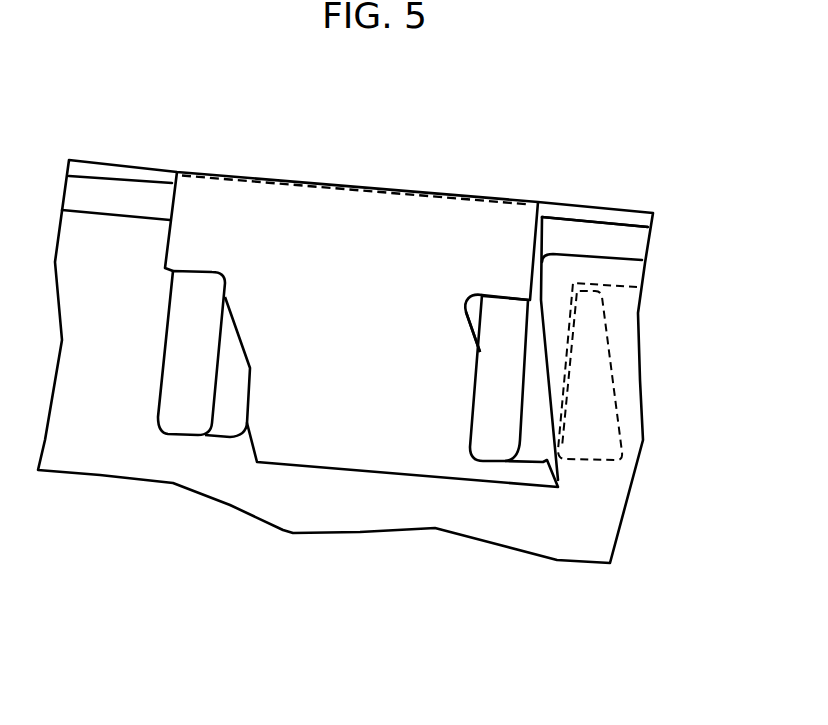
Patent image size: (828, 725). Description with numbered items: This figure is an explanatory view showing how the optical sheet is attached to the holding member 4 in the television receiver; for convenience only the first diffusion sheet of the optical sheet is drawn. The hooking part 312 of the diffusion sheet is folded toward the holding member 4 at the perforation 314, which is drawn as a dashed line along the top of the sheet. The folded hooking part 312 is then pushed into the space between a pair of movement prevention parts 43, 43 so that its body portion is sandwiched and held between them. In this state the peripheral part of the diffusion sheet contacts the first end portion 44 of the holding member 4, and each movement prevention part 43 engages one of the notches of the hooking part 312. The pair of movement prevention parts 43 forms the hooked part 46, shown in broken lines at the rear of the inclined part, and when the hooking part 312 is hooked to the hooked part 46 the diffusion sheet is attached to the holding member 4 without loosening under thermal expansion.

The holding member 4 is at (627, 392).
The movement prevention part 43 is at (513, 425).
The first end portion 44 is at (599, 227).
The hooked part 46 is at (573, 397).
The hooking part 312 is at (482, 226).
The perforation 314 is at (357, 190).